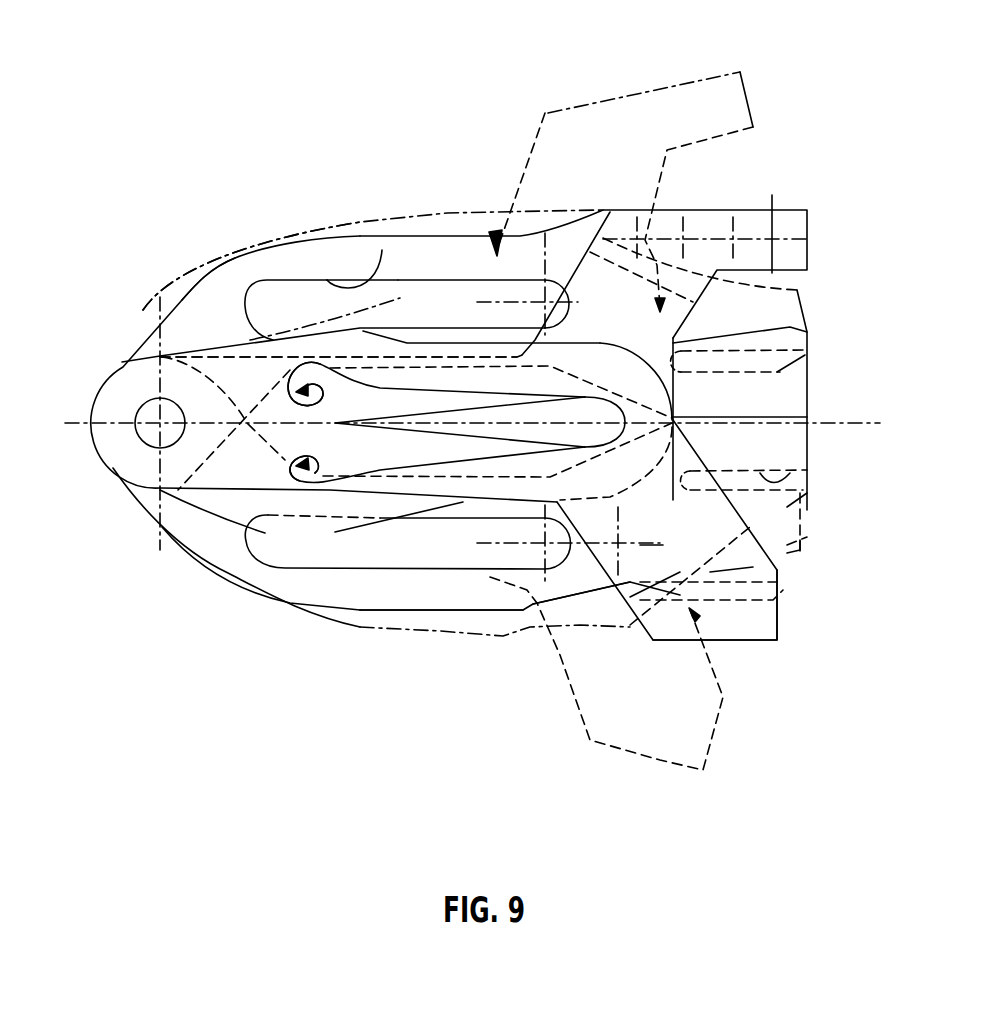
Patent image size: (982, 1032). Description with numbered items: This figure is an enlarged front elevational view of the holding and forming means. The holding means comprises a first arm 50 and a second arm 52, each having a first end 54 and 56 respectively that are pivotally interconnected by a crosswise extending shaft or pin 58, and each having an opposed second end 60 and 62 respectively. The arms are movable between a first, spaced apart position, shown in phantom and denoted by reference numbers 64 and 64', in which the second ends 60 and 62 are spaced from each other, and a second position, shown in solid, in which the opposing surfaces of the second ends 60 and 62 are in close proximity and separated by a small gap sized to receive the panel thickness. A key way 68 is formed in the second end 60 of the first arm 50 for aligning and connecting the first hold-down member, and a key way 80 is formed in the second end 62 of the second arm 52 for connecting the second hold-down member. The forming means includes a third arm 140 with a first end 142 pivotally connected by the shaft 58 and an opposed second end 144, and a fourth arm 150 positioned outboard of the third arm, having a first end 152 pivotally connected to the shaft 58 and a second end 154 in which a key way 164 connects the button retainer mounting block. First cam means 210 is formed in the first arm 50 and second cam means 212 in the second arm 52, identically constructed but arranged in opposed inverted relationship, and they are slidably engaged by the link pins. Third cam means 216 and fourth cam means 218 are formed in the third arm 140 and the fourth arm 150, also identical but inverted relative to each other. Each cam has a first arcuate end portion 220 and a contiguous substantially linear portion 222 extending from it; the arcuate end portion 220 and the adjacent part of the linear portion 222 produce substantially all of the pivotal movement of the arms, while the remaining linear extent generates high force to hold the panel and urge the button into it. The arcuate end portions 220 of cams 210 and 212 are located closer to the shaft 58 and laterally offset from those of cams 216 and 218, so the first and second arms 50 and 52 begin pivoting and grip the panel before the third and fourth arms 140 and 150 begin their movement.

The first arm 50 is at (398, 280).
The second arm 52 is at (443, 586).
The first end 54 is at (207, 323).
The first end 56 is at (205, 533).
The shaft or pin 58 is at (158, 400).
The second end 60 is at (803, 308).
The second end 62 is at (805, 490).
The first spaced apart position 64 is at (766, 252).
The first spaced apart position 64' is at (863, 525).
The key way 68 is at (805, 356).
The key way 80 is at (808, 468).
The third arm 140 is at (727, 203).
The first end 142 is at (242, 355).
The second end 144 is at (792, 224).
The fourth arm 150 is at (613, 583).
The first end 152 is at (143, 511).
The second end 154 is at (730, 625).
The key way 164 is at (783, 595).
The first cam means 210 is at (490, 278).
The second cam means 212 is at (328, 556).
The third cam means 216 is at (328, 392).
The fourth cam means 218 is at (315, 470).
The first arcuate end portion 220 is at (367, 223).
The second substantially linear portion 222 is at (382, 250).